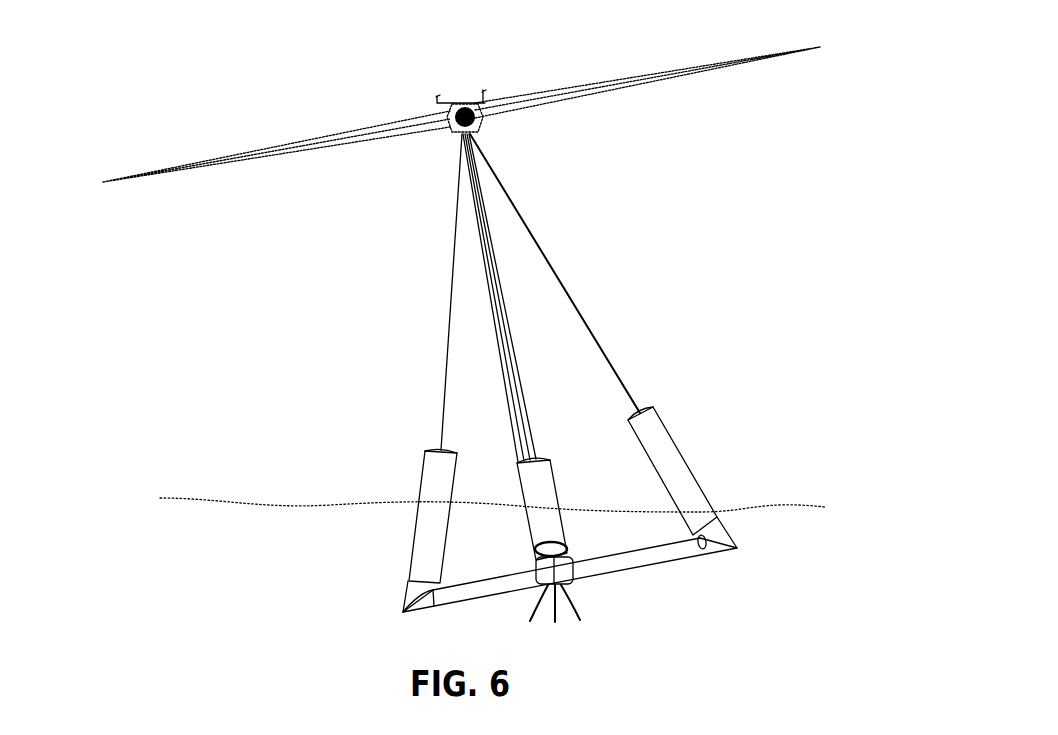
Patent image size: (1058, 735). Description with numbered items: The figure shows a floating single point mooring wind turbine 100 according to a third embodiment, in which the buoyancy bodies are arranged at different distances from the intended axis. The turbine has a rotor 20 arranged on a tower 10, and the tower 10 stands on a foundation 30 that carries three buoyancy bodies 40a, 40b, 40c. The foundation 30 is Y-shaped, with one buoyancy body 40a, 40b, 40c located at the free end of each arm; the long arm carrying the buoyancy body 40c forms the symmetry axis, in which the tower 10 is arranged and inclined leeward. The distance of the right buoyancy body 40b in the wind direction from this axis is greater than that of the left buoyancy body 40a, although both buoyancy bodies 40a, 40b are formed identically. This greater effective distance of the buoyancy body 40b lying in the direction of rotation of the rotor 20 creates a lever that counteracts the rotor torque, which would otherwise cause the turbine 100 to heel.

The single point mooring wind turbine 100 is at (234, 320).
The tower 10 is at (487, 212).
The rotor 20 is at (460, 99).
The foundation 30 is at (447, 604).
The buoyancy body 40a is at (428, 534).
The buoyancy body 40b is at (675, 470).
The buoyancy body 40c is at (553, 524).